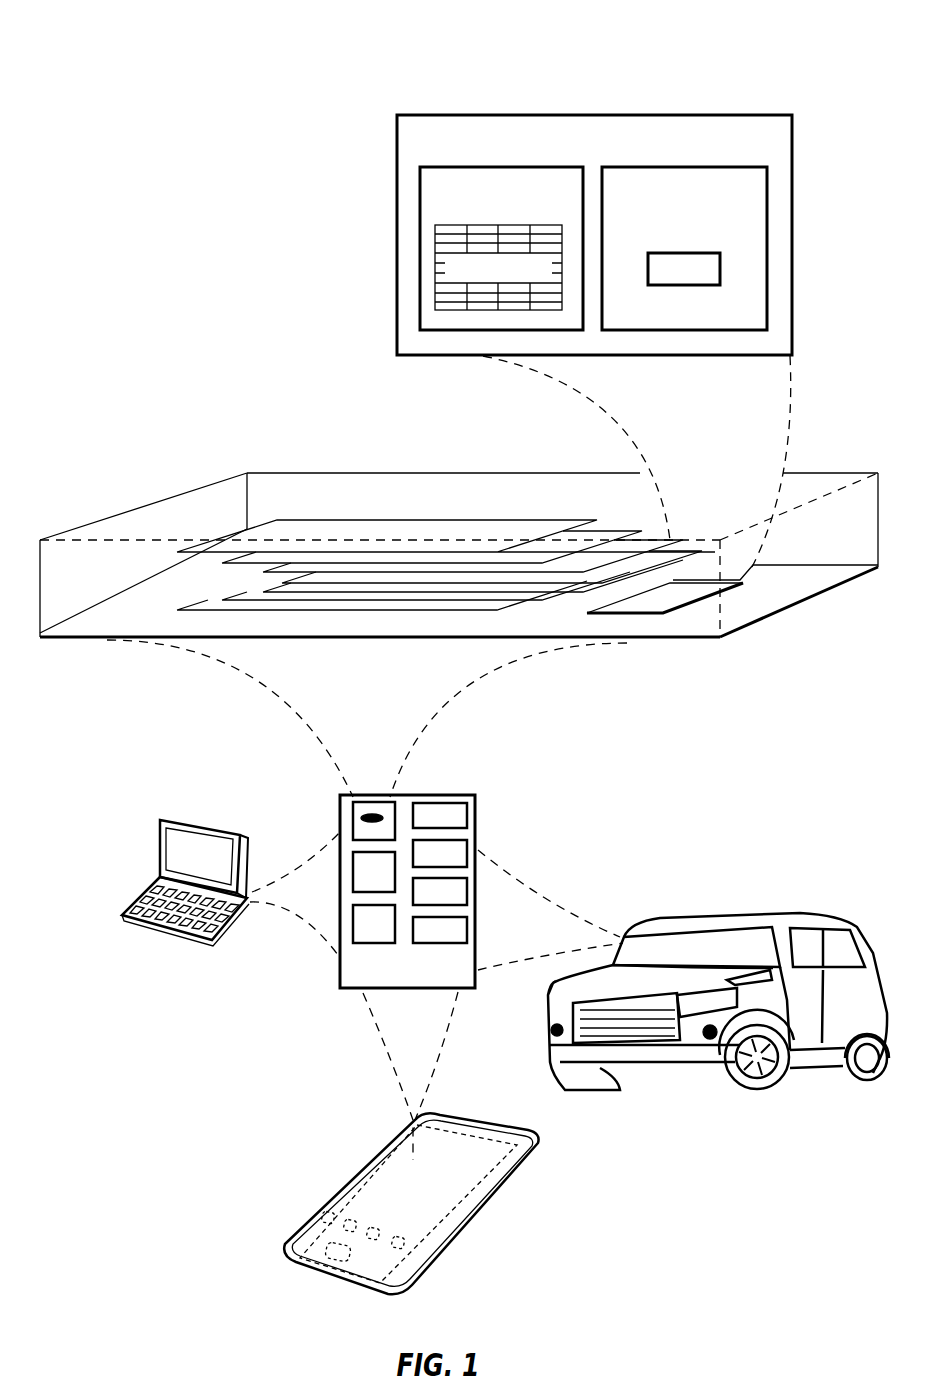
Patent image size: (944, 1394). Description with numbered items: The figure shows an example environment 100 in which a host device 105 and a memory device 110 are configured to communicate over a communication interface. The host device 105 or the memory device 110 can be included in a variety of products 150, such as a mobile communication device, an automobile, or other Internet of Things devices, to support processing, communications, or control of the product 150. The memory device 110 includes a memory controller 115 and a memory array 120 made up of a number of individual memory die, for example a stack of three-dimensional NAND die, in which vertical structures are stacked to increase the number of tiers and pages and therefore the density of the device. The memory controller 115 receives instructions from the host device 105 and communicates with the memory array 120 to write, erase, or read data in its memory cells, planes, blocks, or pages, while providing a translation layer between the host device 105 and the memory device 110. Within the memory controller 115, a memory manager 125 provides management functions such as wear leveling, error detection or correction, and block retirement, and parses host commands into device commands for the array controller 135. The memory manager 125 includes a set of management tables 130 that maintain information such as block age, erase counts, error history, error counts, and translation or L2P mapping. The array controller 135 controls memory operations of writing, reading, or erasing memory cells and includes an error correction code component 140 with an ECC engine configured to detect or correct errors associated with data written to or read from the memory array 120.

The environment 100 is at (767, 40).
The host device 105 is at (341, 801).
The memory device 110 is at (188, 497).
The memory controller 115 is at (397, 118).
The memory array 120 is at (456, 522).
The memory manager 125 is at (420, 203).
The management tables 130 is at (435, 263).
The array controller 135 is at (767, 200).
The error correction code component 140 is at (720, 270).
The products 150 is at (167, 820).